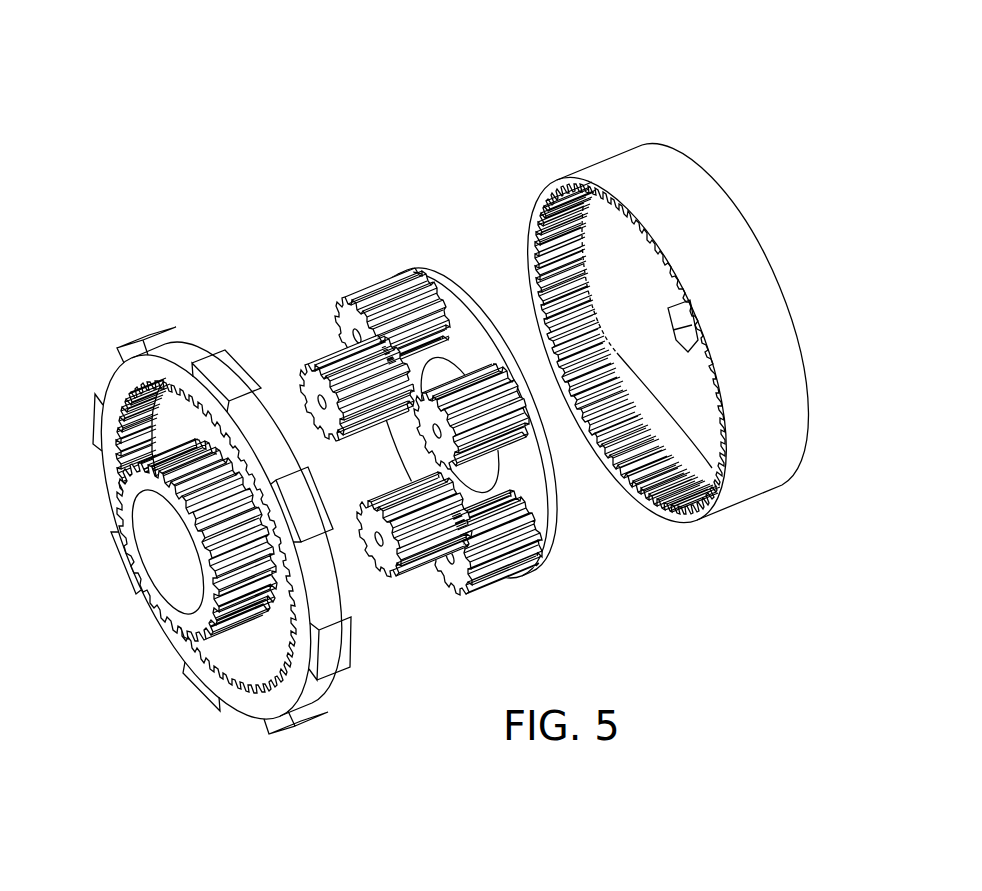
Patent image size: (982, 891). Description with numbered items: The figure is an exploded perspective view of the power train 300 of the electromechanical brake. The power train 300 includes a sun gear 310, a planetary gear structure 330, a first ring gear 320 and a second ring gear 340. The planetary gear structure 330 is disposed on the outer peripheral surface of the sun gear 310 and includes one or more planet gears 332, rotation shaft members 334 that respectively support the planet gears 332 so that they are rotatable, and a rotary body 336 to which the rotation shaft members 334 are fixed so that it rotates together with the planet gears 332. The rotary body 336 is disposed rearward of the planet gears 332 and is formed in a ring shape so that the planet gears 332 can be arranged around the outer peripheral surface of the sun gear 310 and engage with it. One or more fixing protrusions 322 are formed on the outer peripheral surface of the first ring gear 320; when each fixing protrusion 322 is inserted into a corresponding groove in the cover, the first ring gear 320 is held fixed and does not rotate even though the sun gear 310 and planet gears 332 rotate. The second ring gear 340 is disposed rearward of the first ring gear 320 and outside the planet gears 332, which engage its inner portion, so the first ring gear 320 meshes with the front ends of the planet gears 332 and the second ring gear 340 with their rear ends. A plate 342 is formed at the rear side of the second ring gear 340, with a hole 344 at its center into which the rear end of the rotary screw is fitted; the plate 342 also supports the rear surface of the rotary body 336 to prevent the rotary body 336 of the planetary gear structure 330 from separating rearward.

The power train 300 is at (393, 68).
The sun gear 310 is at (120, 397).
The first ring gear 320 is at (206, 491).
The fixing protrusion 322 is at (233, 400).
The planetary gear structure 330 is at (454, 365).
The planet gear 332 is at (362, 288).
The rotation shaft member 334 is at (330, 333).
The rotary body 336 is at (550, 520).
The second ring gear 340 is at (617, 307).
The plate 342 is at (533, 223).
The hole 344 is at (615, 263).